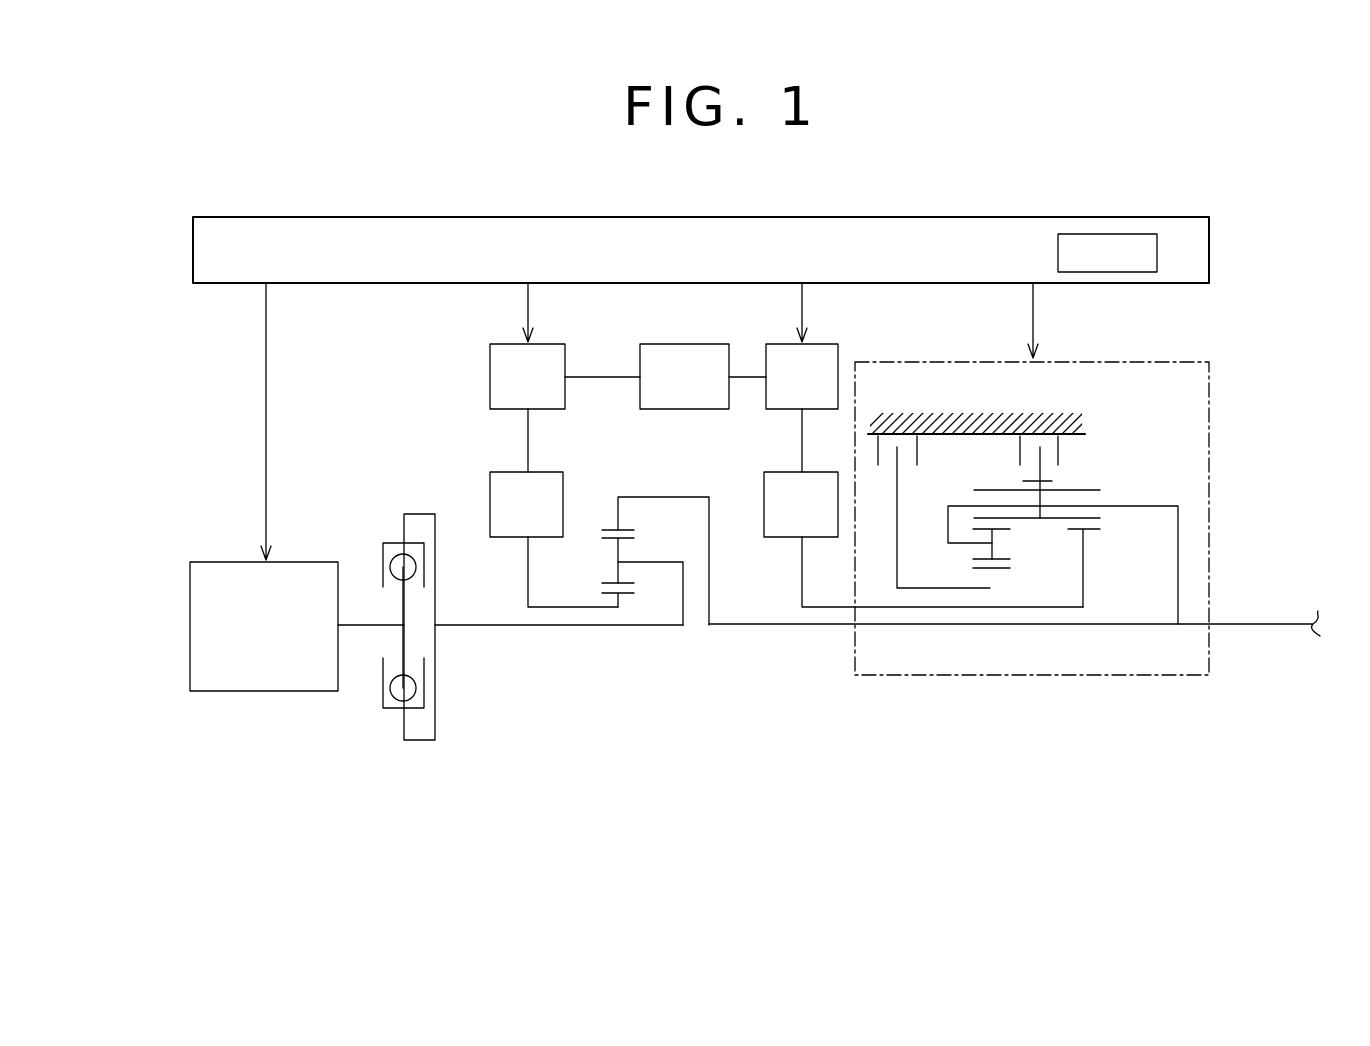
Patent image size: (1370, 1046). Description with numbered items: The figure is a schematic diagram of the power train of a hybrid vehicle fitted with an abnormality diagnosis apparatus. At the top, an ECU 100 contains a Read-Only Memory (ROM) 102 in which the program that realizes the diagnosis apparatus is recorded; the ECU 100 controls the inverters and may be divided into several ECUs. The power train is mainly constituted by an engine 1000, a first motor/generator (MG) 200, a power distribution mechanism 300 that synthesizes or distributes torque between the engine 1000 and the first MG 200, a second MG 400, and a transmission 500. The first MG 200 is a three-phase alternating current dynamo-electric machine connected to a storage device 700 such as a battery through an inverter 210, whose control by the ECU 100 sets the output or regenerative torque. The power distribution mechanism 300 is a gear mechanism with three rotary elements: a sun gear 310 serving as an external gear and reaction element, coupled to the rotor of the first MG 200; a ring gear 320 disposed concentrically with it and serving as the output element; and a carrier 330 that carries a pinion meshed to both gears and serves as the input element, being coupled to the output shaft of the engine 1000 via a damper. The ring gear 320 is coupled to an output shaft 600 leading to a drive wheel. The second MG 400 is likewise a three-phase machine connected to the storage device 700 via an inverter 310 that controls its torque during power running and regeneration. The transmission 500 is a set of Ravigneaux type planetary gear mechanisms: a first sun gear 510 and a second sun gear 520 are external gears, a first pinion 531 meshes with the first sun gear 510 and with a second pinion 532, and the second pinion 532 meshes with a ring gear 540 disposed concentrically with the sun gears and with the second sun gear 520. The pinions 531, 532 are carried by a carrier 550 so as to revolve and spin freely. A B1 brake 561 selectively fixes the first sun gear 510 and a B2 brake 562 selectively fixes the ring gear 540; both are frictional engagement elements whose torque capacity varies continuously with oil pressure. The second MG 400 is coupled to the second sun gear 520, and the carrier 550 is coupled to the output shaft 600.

The ECU 100 is at (683, 214).
The Read-Only Memory (ROM) 102 is at (1116, 232).
The first motor/generator 200 is at (490, 482).
The inverter 210 is at (570, 324).
The power distribution mechanism 300 is at (623, 592).
The sun gear (S) / inverter 310 is at (820, 343).
The ring gear (R) 320 is at (610, 528).
The carrier (C) 330 is at (652, 562).
The second motor/generator 400 is at (781, 538).
The transmission 500 is at (1210, 372).
The first sun gear (S1) 510 is at (1005, 568).
The second sun gear (S2) 520 is at (1100, 530).
The first pinion 531 is at (1038, 550).
The second pinion 532 is at (1000, 490).
The ring gear (R) 540 is at (1052, 481).
The carrier (C) 550 is at (1140, 505).
The B1 brake 561 is at (910, 445).
The B2 brake 562 is at (1052, 445).
The output shaft 600 is at (1262, 627).
The storage device 700 is at (683, 343).
The engine 1000 is at (297, 693).